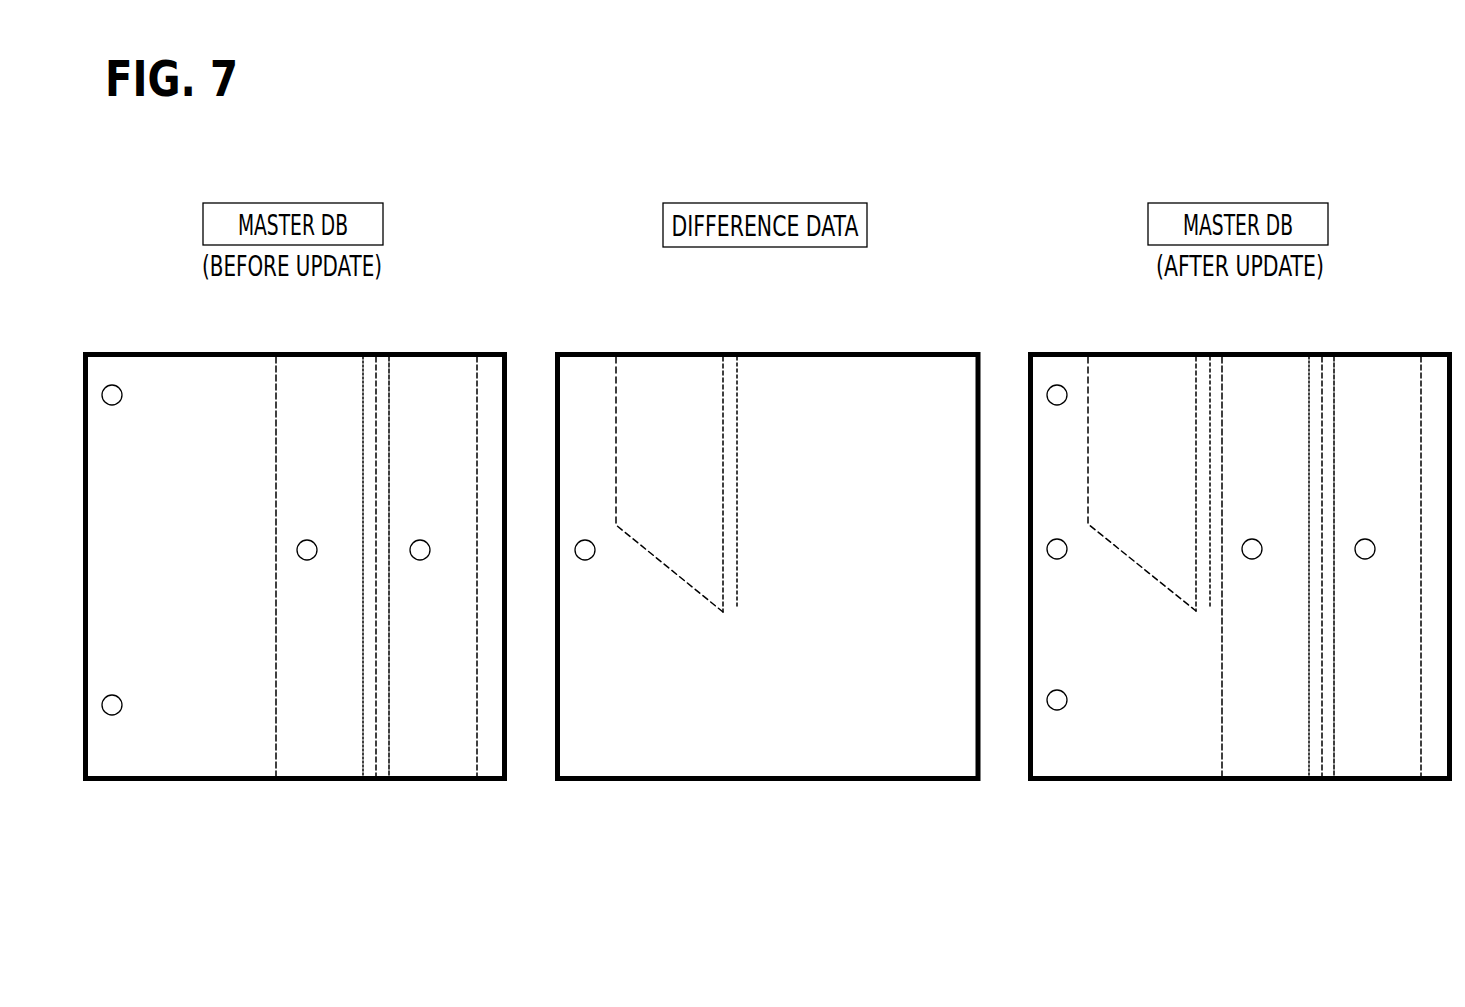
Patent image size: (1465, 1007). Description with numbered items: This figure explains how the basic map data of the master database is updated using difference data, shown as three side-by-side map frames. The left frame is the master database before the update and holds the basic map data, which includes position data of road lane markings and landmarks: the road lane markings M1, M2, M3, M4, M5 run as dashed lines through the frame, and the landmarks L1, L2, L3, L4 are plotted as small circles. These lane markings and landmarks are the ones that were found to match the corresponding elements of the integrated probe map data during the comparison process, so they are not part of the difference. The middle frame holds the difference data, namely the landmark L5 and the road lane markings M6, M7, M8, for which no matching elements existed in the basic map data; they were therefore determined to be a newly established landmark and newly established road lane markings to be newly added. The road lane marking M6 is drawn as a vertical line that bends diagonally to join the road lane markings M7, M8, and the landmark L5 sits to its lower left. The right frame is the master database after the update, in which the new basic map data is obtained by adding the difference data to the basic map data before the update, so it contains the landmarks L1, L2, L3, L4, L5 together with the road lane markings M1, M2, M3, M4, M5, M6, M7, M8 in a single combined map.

The road lane marking M1 is at (276, 744).
The road lane marking M2 is at (363, 744).
The road lane marking M3 is at (376, 762).
The road lane marking M4 is at (389, 744).
The road lane marking M5 is at (477, 748).
The road lane marking M6 is at (612, 380).
The road lane marking M7 is at (720, 376).
The road lane marking M8 is at (740, 376).
The landmark L1 is at (586, 418).
The landmark L2 is at (586, 681).
The landmark L3 is at (781, 570).
The landmark L4 is at (894, 570).
The landmark L5 is at (823, 570).